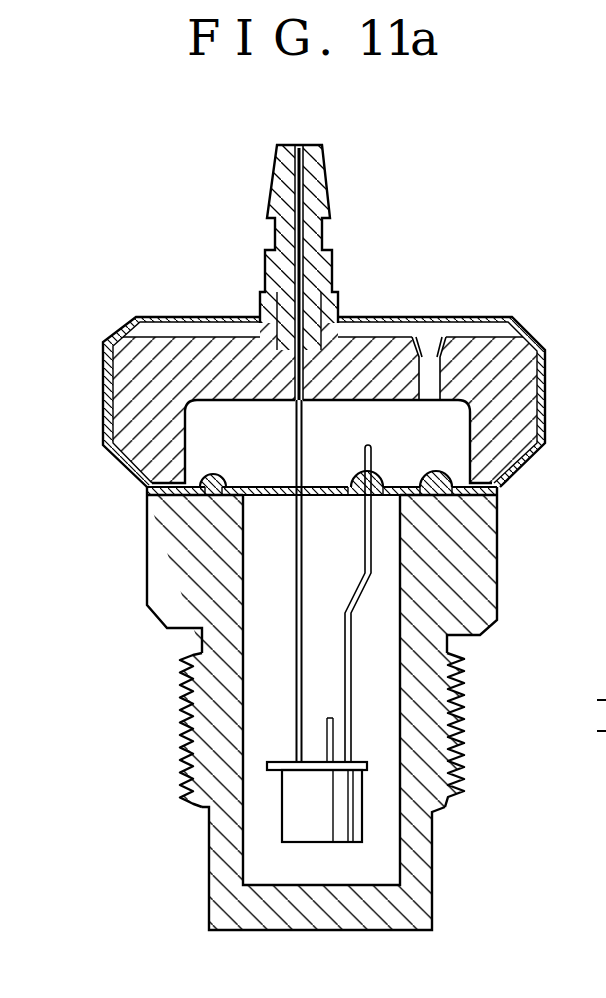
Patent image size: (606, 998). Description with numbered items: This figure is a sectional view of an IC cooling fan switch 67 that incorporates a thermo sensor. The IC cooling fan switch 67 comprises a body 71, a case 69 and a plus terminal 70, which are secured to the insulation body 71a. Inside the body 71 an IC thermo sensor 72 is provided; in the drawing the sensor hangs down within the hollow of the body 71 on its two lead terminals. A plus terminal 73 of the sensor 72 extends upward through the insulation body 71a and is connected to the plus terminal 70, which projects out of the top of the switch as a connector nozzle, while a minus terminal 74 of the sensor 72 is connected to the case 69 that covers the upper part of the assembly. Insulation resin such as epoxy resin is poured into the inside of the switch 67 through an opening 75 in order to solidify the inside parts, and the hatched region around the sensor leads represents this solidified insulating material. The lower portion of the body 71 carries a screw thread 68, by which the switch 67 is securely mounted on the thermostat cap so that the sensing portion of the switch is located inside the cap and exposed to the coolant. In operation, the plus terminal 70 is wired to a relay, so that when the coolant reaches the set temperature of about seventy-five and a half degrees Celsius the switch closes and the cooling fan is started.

The IC cooling fan switch 67 is at (540, 223).
The screw thread 68 is at (184, 723).
The case 69 is at (103, 402).
The plus terminal 70 is at (326, 175).
The body 71 is at (497, 553).
The insulation body 71a is at (384, 340).
The IC thermo sensor 72 is at (300, 812).
The plus terminal 73 is at (294, 659).
The minus terminal 74 is at (353, 660).
The opening 75 is at (429, 342).